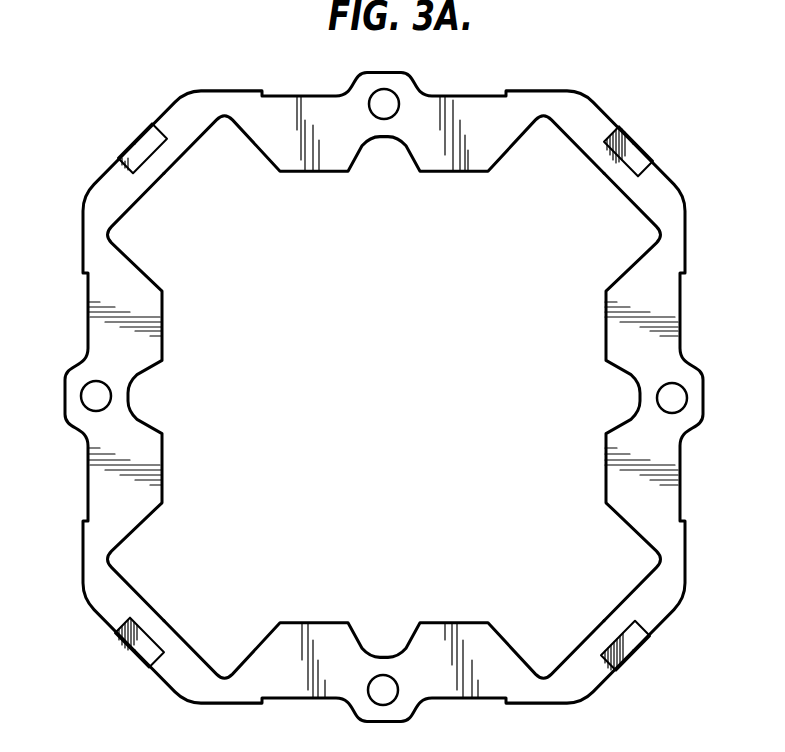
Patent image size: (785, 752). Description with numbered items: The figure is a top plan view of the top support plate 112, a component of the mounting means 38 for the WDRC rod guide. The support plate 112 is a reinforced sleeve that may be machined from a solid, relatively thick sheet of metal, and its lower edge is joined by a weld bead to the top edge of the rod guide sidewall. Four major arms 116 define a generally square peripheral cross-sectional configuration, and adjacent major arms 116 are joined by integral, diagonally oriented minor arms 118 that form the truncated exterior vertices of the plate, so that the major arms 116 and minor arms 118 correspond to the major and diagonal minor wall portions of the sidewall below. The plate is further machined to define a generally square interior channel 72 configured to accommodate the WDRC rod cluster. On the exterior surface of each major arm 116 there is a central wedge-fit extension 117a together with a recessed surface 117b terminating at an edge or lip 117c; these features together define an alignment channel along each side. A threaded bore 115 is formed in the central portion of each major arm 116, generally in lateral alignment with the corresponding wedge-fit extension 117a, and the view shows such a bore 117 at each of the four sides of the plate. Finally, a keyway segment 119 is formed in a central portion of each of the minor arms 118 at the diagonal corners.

The mounting means 38 is at (154, 709).
The interior channel 72 is at (352, 351).
The top support plate 112 is at (520, 373).
The threaded bore 115 is at (663, 384).
The major arms 116 is at (460, 173).
The mounting holes 117 is at (388, 102).
The wedge-fit extension 117a is at (702, 402).
The recessed surface 117b is at (679, 477).
The edge or lip 117c is at (684, 520).
The minor arms 118 is at (147, 182).
The keyway segment 119 is at (130, 637).